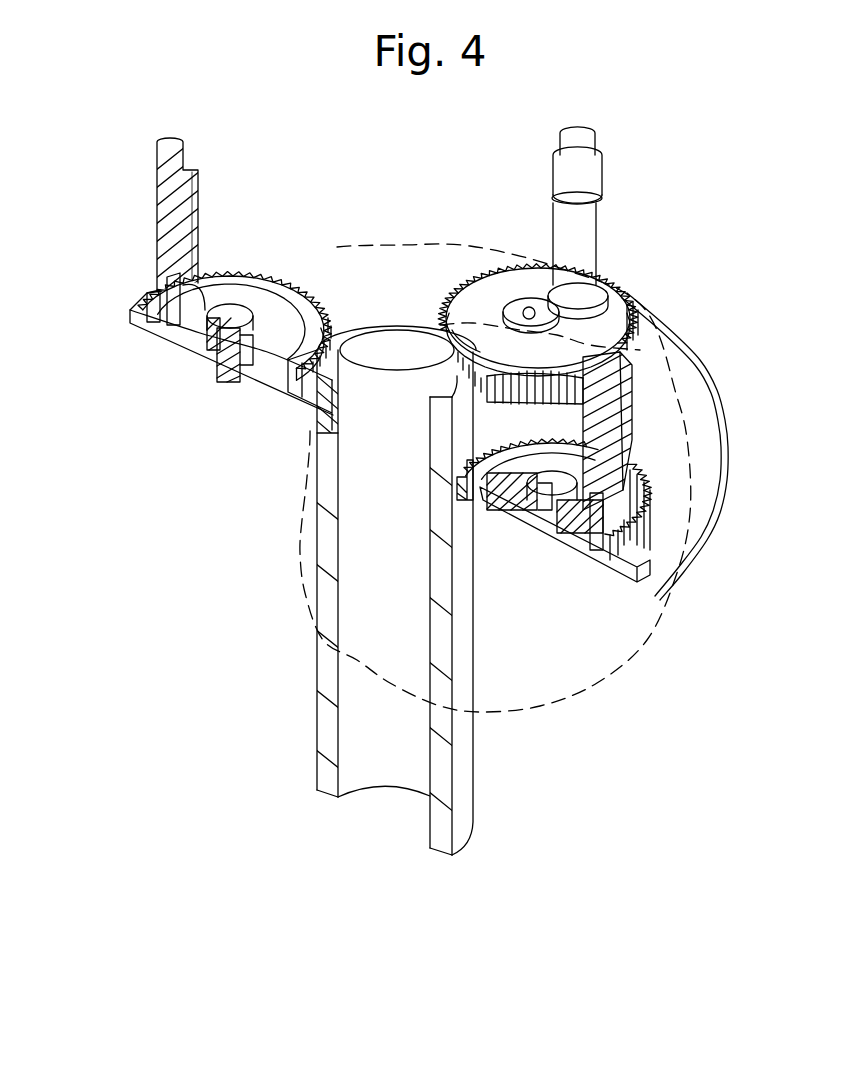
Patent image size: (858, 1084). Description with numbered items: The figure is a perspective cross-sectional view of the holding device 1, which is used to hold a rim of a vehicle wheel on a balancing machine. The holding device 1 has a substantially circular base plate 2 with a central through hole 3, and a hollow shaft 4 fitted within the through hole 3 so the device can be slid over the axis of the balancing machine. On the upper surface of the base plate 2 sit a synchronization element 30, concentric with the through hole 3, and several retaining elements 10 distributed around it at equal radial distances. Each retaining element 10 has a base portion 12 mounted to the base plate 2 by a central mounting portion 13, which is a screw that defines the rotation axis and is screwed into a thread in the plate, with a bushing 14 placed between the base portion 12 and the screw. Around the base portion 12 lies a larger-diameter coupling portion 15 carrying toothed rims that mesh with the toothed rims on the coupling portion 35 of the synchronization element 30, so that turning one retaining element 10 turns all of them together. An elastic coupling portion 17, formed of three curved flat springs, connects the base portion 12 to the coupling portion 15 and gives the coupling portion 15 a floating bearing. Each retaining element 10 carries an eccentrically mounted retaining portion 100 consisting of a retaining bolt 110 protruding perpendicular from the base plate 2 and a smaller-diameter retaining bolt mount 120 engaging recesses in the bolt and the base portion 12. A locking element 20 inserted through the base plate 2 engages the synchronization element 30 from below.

The holding device 1 is at (105, 473).
The base plate 2 is at (706, 422).
The through hole 3 is at (392, 397).
The hollow shaft 4 is at (327, 607).
The retaining element 10 is at (107, 300).
The base portion 12 is at (238, 300).
The central mounting portion 13 is at (220, 347).
The bushing 14 is at (207, 337).
The coupling portion 15 is at (278, 277).
The elastic coupling portion 17 is at (250, 283).
The locking element 20 is at (490, 462).
The synchronization element 30 is at (322, 392).
The coupling portion of the synchronization element 35 is at (317, 367).
The retaining portion 100 is at (173, 237).
The retaining bolt 110 is at (157, 257).
The retaining bolt mount 120 is at (172, 308).